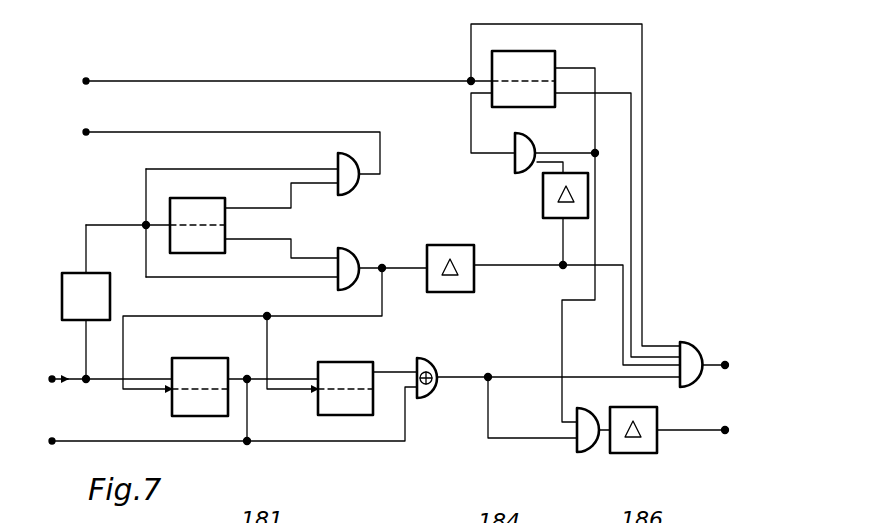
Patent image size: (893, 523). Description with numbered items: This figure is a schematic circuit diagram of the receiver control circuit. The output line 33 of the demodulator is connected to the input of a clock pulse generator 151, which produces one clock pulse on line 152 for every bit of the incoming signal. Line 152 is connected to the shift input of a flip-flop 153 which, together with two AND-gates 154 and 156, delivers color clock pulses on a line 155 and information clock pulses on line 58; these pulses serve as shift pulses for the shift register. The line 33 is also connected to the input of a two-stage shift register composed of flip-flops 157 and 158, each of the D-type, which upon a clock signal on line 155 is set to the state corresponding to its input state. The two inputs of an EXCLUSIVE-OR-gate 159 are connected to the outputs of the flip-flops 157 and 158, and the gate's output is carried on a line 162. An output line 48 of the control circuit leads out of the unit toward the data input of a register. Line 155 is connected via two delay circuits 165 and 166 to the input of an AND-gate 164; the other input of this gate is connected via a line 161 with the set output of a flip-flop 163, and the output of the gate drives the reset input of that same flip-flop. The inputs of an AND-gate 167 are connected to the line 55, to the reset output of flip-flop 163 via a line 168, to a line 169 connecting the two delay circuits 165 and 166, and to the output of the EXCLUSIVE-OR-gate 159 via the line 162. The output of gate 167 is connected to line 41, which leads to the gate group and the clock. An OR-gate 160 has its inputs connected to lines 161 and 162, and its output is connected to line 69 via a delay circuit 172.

The line 55 is at (268, 82).
The line 58 is at (213, 146).
The line 152 is at (128, 225).
The flip-flop 153 is at (226, 203).
The AND-gate 156 is at (360, 178).
The AND-gate 154 is at (355, 259).
The line 155 is at (383, 290).
The clock pulse generator 151 is at (111, 284).
The output line 33 is at (105, 382).
The output line 48 is at (72, 446).
The flip-flop 157 is at (192, 358).
The flip-flop 158 is at (334, 362).
The EXCLUSIVE-OR-gate 159 is at (437, 364).
The line 162 is at (478, 380).
The delay circuit 165 is at (477, 261).
The line 169 is at (530, 270).
The delay circuit 166 is at (543, 213).
The AND-gate 164 is at (537, 148).
The flip-flop 163 is at (557, 58).
The line 161 is at (594, 88).
The line 168 is at (632, 193).
The AND-gate 167 is at (707, 327).
The line 41 is at (741, 365).
The OR-gate 160 is at (578, 449).
The delay circuit 172 is at (660, 437).
The line 69 is at (742, 431).